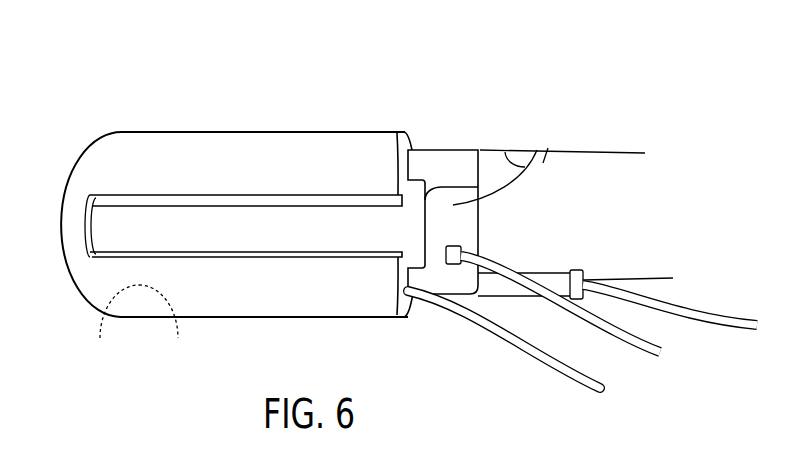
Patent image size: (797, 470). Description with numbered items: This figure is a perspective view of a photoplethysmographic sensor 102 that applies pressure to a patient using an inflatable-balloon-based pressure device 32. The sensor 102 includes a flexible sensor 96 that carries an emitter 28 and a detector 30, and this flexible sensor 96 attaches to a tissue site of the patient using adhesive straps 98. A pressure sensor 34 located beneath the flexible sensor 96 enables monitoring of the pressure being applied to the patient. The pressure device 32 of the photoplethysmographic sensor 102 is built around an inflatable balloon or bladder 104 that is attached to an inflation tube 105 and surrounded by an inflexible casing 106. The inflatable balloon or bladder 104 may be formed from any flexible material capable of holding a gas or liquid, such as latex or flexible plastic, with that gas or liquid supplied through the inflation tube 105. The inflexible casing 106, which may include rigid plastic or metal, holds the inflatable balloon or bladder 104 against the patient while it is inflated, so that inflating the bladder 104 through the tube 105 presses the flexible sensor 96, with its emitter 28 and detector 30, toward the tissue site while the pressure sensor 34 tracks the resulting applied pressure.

The photoplethysmographic sensor 102 is at (291, 60).
The pressure device 32 is at (282, 124).
The inflexible casing 106 is at (168, 145).
The inflatable balloon or bladder 104 is at (120, 202).
The emitter 28 is at (113, 324).
The detector 30 is at (163, 324).
The flexible sensor 96 is at (427, 158).
The adhesive straps 98 is at (538, 172).
The pressure sensor 34 is at (552, 275).
The inflation tube 105 is at (498, 337).